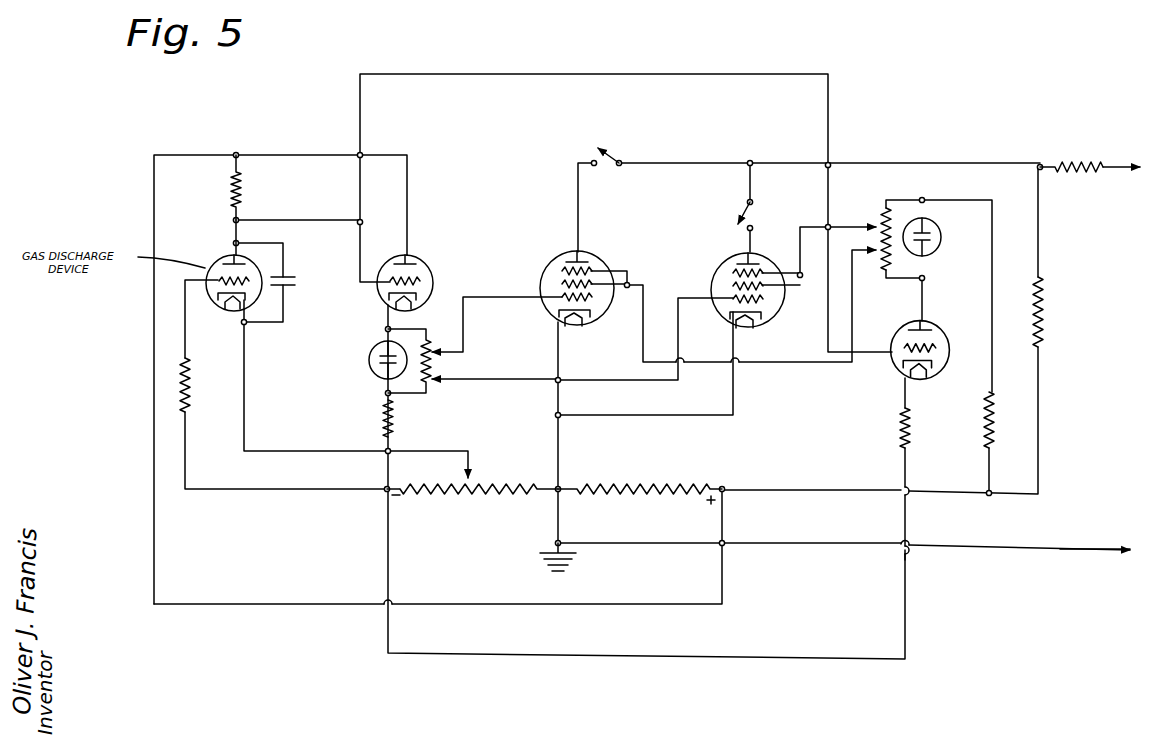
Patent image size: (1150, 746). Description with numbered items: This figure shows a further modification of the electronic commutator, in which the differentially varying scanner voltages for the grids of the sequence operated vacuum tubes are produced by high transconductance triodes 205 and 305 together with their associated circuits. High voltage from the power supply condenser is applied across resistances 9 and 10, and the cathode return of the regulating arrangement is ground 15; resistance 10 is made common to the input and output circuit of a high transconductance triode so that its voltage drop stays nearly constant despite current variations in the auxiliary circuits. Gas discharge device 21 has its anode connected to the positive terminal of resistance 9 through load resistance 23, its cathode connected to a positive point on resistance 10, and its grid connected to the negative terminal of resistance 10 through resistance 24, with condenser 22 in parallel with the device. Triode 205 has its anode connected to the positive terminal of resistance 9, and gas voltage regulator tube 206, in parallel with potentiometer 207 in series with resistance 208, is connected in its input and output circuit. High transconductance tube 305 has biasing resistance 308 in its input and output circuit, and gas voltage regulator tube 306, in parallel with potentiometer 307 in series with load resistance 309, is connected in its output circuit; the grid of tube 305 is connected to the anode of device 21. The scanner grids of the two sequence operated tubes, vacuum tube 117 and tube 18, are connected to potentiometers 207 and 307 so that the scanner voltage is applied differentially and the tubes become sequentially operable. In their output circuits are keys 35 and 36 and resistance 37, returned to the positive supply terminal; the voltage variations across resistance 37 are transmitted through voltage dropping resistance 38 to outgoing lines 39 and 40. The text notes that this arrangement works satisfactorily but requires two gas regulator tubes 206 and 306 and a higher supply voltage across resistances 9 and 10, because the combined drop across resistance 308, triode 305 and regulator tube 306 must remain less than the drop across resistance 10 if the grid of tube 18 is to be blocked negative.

The resistance 9 is at (640, 490).
The resistance 10 is at (468, 494).
The ground 15 is at (555, 553).
The sequence operated vacuum tube 18 is at (716, 268).
The gas discharge device 21 is at (222, 260).
The condenser 22 is at (318, 265).
The load resistance 23 is at (236, 198).
The resistance 24 is at (190, 390).
The key 35 is at (610, 156).
The key 36 is at (741, 216).
The resistance 37 is at (1045, 312).
The voltage dropping resistance 38 is at (1073, 175).
The outgoing line 39 is at (1113, 167).
The outgoing line 40 is at (1026, 551).
The electron discharge tube 117 is at (589, 262).
The high transconductance triode 205 is at (416, 260).
The gas voltage regulator tube 206 is at (372, 349).
The potentiometer 207 is at (437, 368).
The resistance 208 is at (384, 427).
The high transconductance tube 305 is at (938, 334).
The gas voltage regulator tube 306 is at (936, 246).
The potentiometer 307 is at (880, 214).
The biasing resistance 308 is at (899, 432).
The load resistance 309 is at (985, 422).